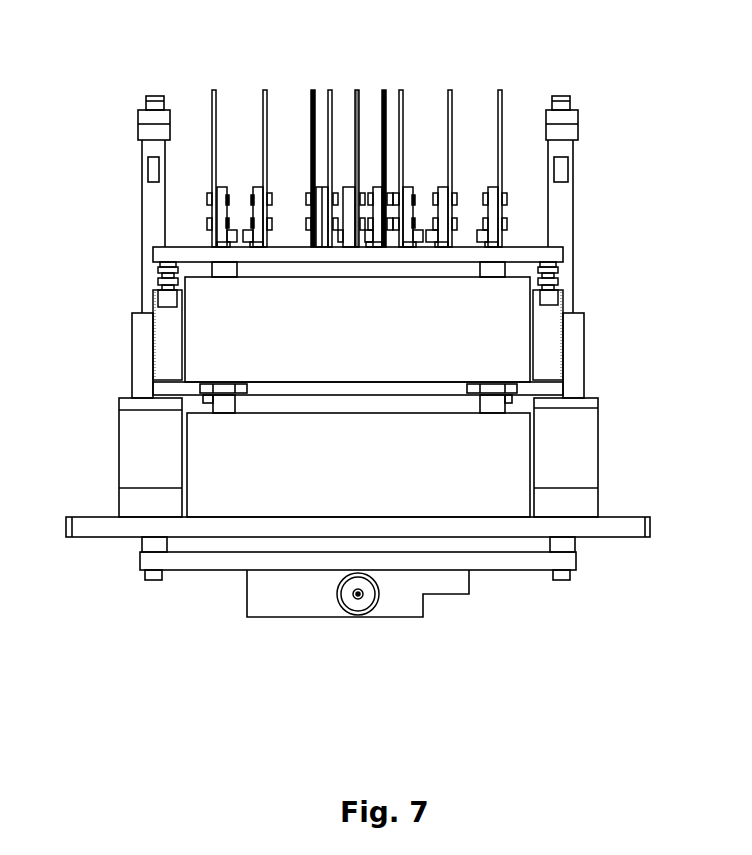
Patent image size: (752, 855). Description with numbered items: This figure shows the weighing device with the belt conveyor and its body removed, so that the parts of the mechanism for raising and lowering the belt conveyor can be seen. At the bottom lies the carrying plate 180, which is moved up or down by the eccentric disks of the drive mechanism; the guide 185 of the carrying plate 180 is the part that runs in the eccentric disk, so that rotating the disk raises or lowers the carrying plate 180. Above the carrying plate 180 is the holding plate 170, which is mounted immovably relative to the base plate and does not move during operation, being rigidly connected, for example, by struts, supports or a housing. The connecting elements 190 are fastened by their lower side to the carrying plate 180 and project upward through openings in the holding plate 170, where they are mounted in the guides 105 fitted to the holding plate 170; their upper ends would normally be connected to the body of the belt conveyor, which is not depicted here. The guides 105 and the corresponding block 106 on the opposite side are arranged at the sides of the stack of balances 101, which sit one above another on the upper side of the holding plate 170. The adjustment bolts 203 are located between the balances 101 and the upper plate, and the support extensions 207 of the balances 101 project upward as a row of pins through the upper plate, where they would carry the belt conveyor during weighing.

The balances 101 is at (508, 337).
The guides for the connecting elements 105 is at (572, 362).
The left guide block 106 is at (142, 343).
The holding plate 170 is at (93, 525).
The carrying plate 180 is at (150, 560).
The guide of the carrying plate 185 is at (367, 593).
The connecting elements 190 is at (558, 200).
The adjustment bolt 203 is at (275, 253).
The support extensions 207 is at (263, 103).